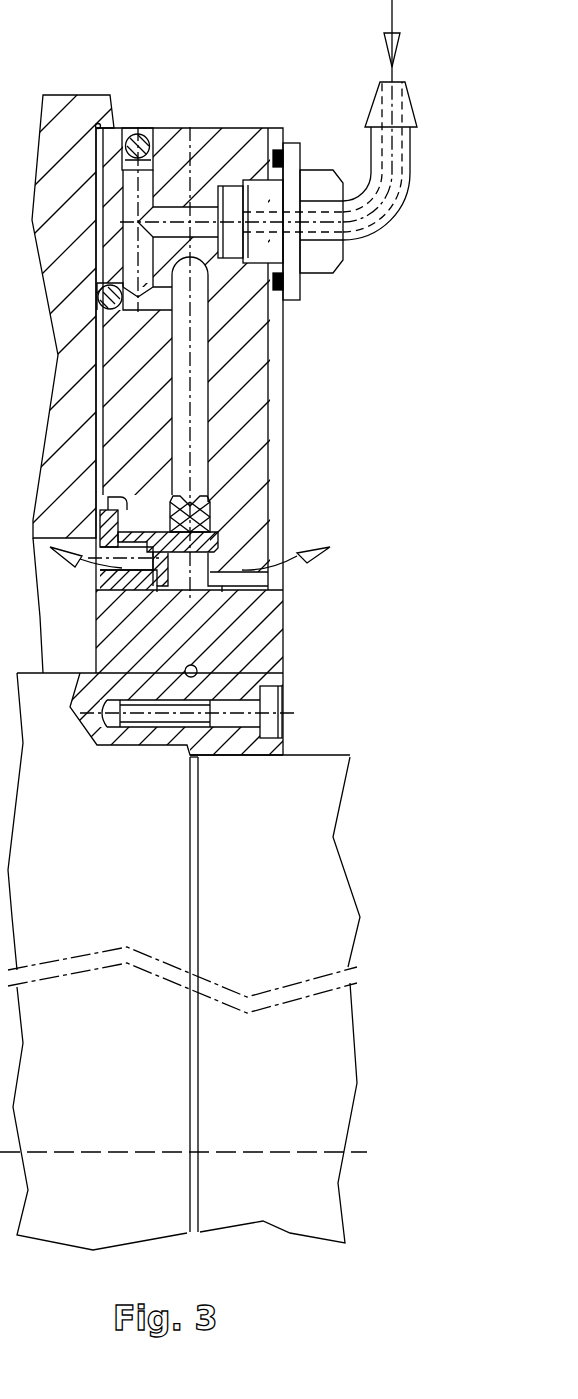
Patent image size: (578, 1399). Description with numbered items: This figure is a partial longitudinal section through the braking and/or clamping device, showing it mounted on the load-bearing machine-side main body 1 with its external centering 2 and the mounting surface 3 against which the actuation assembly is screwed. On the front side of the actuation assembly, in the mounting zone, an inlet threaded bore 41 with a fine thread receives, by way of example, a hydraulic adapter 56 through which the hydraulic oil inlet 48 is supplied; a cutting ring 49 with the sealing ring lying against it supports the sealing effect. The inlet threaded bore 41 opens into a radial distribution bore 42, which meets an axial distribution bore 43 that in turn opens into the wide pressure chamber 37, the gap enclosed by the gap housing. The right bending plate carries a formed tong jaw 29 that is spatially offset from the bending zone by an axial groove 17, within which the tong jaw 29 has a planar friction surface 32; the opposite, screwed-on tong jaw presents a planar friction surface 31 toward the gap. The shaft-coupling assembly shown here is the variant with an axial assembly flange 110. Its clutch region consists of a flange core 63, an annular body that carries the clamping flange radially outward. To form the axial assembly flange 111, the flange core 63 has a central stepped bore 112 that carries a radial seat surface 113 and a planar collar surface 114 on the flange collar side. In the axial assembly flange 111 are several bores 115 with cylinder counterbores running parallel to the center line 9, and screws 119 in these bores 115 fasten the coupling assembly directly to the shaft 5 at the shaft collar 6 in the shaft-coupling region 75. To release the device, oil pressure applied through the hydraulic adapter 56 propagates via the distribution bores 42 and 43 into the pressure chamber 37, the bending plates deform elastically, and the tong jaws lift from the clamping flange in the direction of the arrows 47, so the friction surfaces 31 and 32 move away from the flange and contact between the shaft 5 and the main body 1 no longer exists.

The main body 1 is at (73, 117).
The centering 2 is at (96, 228).
The mounting surface 3 is at (106, 127).
The radial distribution bore 42 is at (145, 205).
The inlet threaded bore 41 is at (243, 180).
The hydraulic adapter 56 is at (375, 115).
The hydraulic oil inlet 48 is at (392, 48).
The cutting ring 49 is at (281, 289).
The axial distribution bore 43 is at (163, 303).
The pressure chamber 37 is at (198, 425).
The friction surface 31 is at (163, 545).
The axial groove 17 is at (218, 533).
The tong jaw 29 is at (225, 560).
The arrows 47 is at (330, 547).
The friction surface 32 is at (212, 575).
The flange core 63 is at (231, 610).
The axial assembly flange 111 is at (290, 638).
The stepped bore 112 is at (197, 687).
The shaft-coupling assembly with axial assembly flange 110 is at (292, 691).
The bores 115 is at (278, 738).
The collar surface 114 is at (209, 771).
The shaft-coupling region 75 is at (204, 762).
The shaft collar 6 is at (189, 844).
The shaft 5 is at (292, 893).
The center line 9 is at (288, 1152).
The seat surface 113 is at (103, 673).
The screws 119 is at (155, 718).